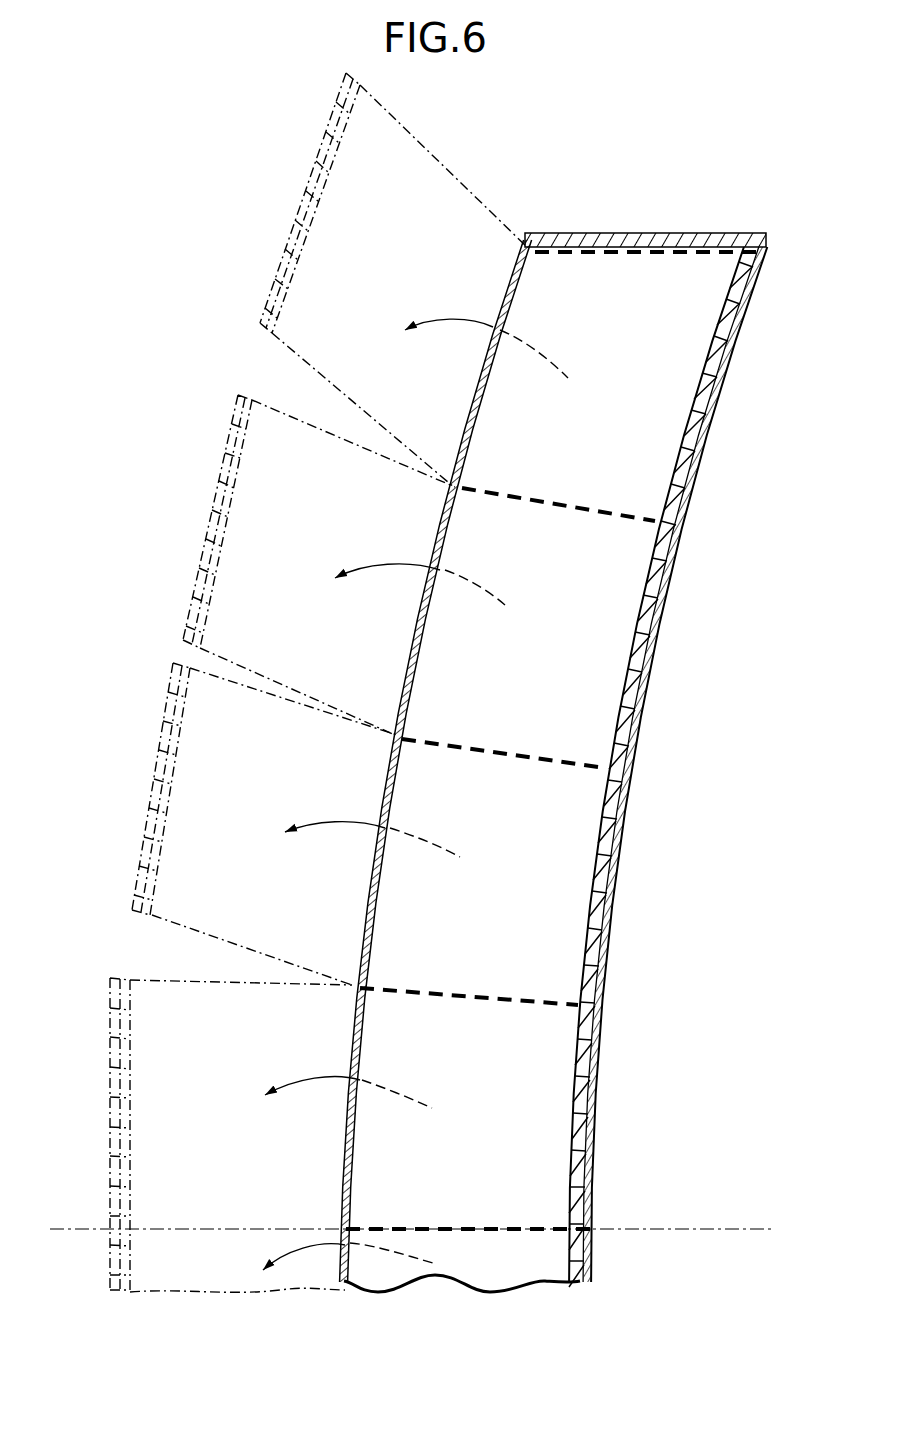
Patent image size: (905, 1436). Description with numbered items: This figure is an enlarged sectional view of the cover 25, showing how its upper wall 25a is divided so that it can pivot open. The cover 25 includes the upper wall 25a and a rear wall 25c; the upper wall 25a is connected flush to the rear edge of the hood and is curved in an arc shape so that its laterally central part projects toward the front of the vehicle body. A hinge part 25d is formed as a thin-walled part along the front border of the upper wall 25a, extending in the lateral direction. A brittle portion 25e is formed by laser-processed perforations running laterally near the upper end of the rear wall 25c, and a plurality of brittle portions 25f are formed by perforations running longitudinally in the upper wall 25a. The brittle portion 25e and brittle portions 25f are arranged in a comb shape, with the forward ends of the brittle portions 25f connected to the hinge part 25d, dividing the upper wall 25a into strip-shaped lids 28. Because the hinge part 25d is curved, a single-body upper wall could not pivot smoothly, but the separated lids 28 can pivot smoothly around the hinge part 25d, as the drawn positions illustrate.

The cover 25 is at (618, 893).
The upper wall 25a is at (603, 280).
The rear wall 25c is at (665, 628).
The hinge part 25d is at (443, 528).
The brittle portion 25e is at (603, 832).
The brittle portions 25f is at (637, 256).
The strip-shaped lids 28 is at (490, 398).